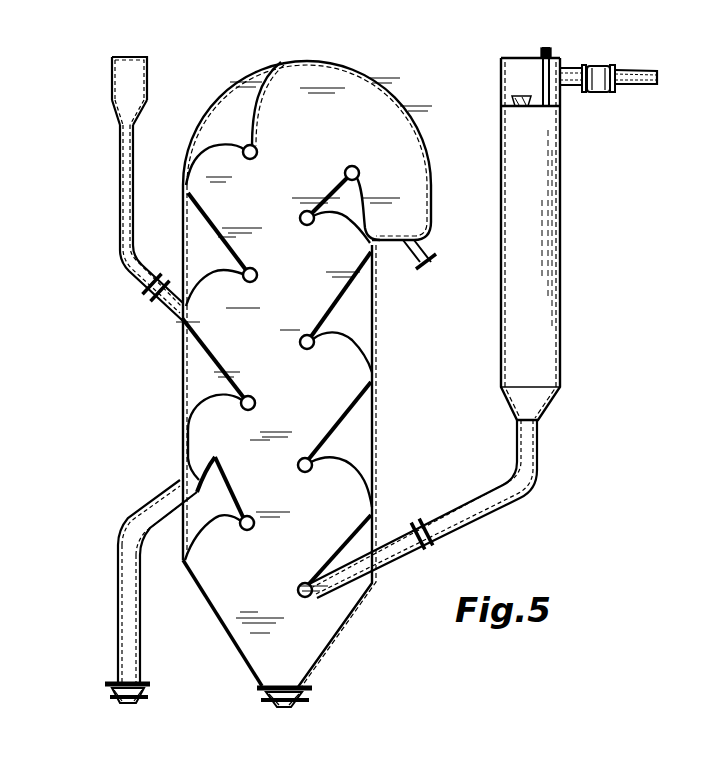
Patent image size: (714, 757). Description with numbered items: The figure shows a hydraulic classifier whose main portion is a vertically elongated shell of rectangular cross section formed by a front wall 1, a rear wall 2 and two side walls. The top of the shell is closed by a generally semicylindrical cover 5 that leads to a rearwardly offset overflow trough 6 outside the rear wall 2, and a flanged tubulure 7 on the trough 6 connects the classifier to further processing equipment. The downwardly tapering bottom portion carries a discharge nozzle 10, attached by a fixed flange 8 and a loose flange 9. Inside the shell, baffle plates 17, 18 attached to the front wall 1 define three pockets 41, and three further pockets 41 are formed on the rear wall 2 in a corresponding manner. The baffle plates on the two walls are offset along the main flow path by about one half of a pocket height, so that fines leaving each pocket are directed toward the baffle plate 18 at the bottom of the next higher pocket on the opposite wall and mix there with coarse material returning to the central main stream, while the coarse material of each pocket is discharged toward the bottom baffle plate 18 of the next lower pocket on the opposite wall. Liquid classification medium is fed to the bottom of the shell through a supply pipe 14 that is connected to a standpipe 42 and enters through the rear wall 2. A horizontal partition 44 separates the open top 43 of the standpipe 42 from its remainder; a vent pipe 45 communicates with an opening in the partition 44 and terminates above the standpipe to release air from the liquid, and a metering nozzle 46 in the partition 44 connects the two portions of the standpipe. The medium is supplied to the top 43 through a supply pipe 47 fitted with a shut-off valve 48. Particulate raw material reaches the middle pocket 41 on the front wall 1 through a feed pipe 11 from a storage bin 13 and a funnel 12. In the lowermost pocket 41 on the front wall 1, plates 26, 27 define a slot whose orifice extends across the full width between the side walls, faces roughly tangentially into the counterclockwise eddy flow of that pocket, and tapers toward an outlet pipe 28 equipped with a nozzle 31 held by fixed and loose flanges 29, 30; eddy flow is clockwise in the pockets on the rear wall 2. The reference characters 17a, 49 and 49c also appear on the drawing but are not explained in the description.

The front wall 1 is at (177, 538).
The rear wall 2 is at (378, 448).
The semicylindrical cover 5 is at (283, 62).
The overflow trough 6 is at (431, 192).
The flanged tubulure 7 is at (430, 240).
The fixed flange 8 is at (260, 687).
The loose flange 9 is at (273, 703).
The discharge nozzle 10 is at (307, 693).
The feed pipe 11 is at (125, 160).
The funnel 12 is at (125, 118).
The storage bin 13 is at (115, 72).
The supply pipe 14 is at (490, 510).
The baffle plate 17 is at (208, 147).
The inner partition 17a is at (267, 90).
The baffle plate 18 is at (222, 237).
The plate 26 is at (197, 482).
The plate 27 is at (143, 517).
The outlet pipe 28 is at (117, 628).
The fixed flange 29 is at (105, 683).
The loose flange 30 is at (113, 702).
The nozzle 31 is at (143, 694).
The pocket 41 is at (190, 175).
The standpipe 42 is at (562, 220).
The open top 43 is at (502, 63).
The horizontal partition 44 is at (561, 118).
The vent pipe 45 is at (547, 48).
The metering nozzle 46 is at (513, 108).
The supply pipe 47 is at (572, 77).
The shut-off valve 48 is at (597, 82).
The tube 49 is at (245, 147).
The tube 49c is at (249, 284).